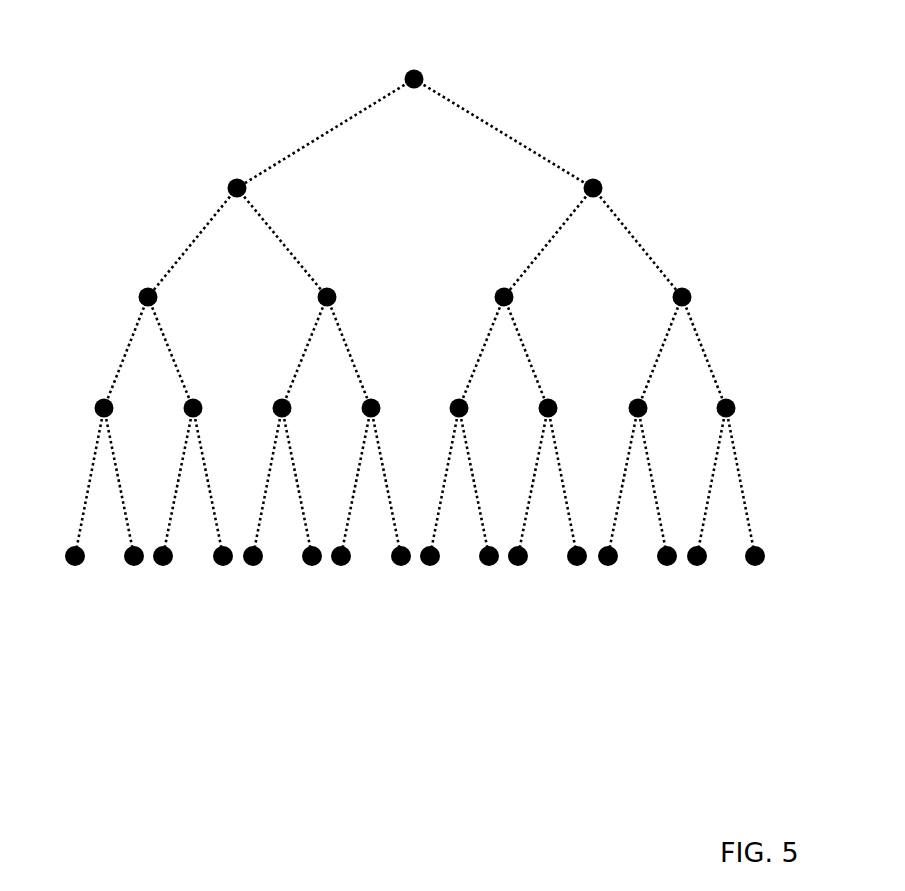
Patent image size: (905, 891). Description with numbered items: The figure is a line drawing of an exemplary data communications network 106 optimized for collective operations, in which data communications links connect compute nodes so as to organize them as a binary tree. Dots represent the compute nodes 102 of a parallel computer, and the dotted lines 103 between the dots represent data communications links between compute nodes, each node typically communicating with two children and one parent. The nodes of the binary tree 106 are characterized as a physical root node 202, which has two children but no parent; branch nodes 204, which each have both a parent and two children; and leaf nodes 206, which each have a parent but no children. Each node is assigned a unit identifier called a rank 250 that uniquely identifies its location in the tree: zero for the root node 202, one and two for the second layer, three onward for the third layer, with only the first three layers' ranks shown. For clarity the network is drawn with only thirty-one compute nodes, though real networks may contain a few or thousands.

The compute nodes 102 is at (488, 563).
The dotted lines 103 is at (336, 128).
The data communications network 106 is at (204, 653).
The physical root node 202 is at (432, 72).
The branch nodes 204 is at (779, 138).
The leaf nodes 206 is at (779, 592).
The rank 250 is at (555, 198).